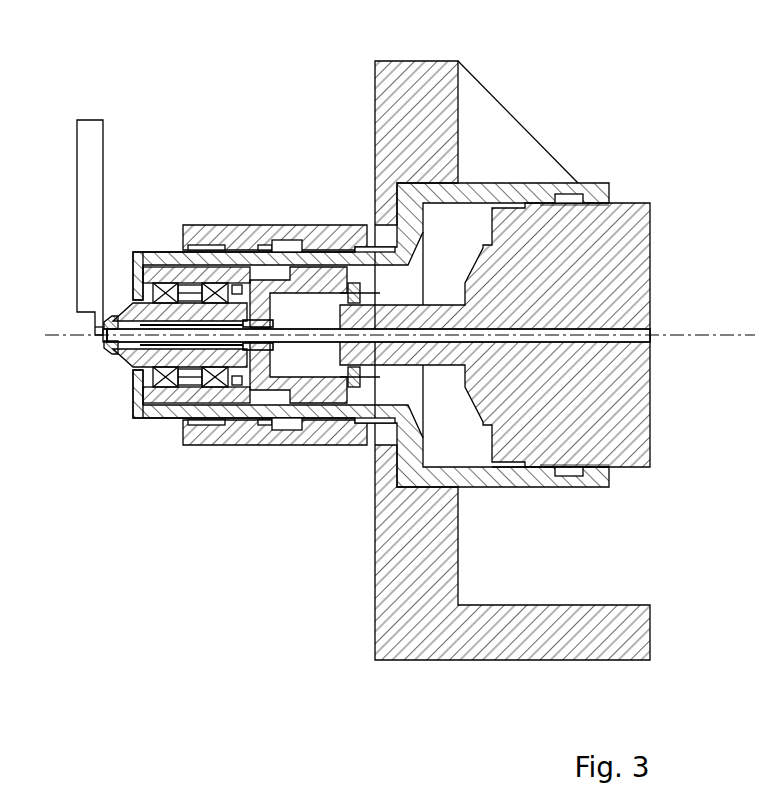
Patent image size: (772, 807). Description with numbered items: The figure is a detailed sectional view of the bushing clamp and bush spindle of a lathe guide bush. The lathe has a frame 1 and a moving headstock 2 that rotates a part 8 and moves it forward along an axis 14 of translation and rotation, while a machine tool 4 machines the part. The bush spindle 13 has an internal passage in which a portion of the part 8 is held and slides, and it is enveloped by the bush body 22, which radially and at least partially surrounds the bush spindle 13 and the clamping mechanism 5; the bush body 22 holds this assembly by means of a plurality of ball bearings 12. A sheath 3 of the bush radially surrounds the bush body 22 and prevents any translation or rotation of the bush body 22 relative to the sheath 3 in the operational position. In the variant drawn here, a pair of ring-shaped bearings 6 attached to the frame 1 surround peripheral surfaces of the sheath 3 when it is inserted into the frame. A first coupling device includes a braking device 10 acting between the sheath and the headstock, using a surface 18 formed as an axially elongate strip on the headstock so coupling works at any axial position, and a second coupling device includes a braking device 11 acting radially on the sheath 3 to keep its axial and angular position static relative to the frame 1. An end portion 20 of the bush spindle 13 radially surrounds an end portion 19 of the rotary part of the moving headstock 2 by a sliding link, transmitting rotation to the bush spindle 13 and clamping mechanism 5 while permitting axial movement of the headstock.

The frame 1 is at (388, 105).
The moving headstock 2 is at (613, 248).
The sheath of the bush 3 is at (530, 187).
The machine tool 4 is at (78, 182).
The clamping mechanism 5 is at (110, 348).
The ring-shaped bearings 6 is at (430, 185).
The part 8 is at (107, 335).
The braking device 10 is at (568, 478).
The braking device 11 is at (290, 430).
The ball bearings 12 is at (157, 395).
The bush spindle 13 is at (160, 298).
The axis 14 is at (676, 330).
The surface 18 is at (585, 478).
The end portion of the rotary part of the moving headstock 19 is at (372, 300).
The end portion of the bush spindle 20 is at (312, 288).
The bush body 22 is at (197, 275).